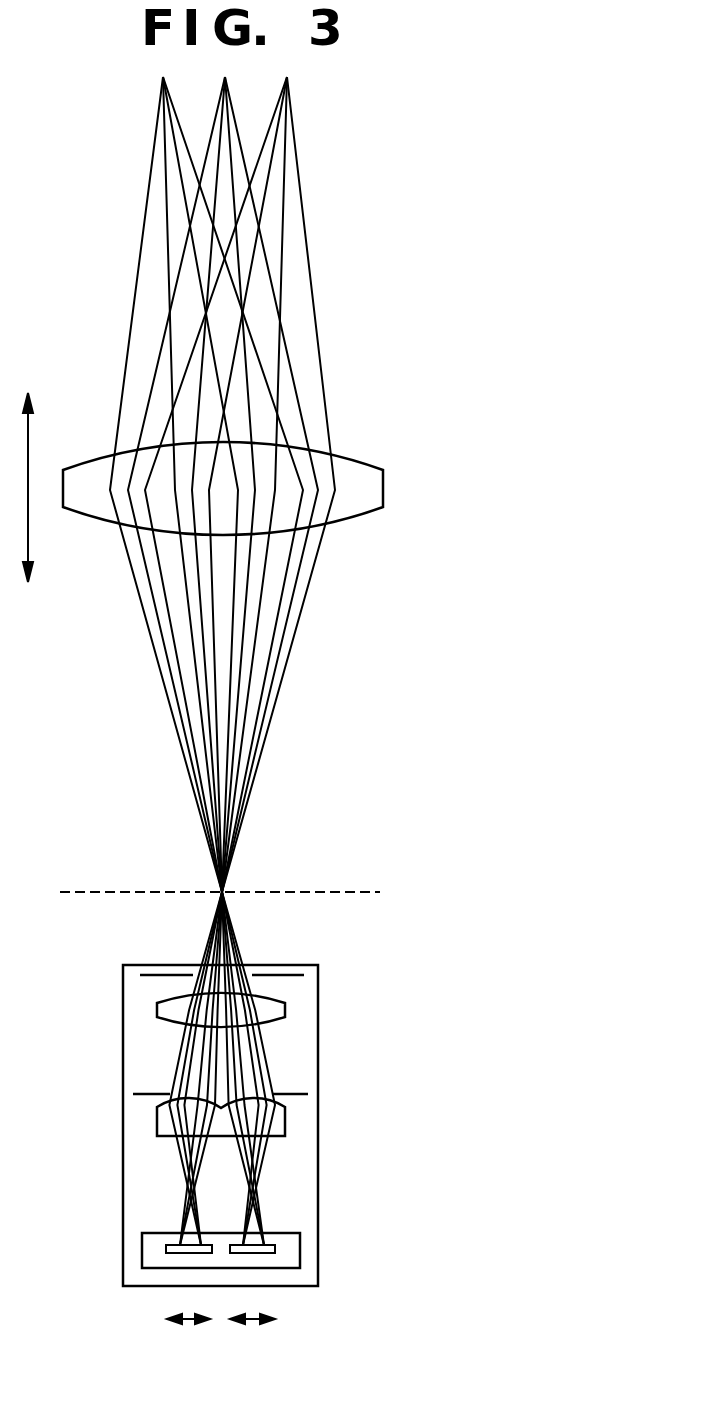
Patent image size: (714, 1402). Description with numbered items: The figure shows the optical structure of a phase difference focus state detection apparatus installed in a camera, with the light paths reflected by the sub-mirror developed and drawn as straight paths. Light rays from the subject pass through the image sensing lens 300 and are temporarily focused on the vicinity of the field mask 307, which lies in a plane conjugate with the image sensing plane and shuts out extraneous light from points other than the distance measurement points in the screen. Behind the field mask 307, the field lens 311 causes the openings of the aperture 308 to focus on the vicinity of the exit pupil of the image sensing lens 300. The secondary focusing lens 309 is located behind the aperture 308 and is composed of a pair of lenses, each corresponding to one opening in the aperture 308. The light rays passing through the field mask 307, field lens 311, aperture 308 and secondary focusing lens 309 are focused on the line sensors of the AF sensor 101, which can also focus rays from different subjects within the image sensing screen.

The image sensing lens 300 is at (384, 489).
The field mask 307 is at (285, 976).
The field lens 311 is at (283, 1022).
The aperture 308 is at (285, 1092).
The secondary focusing lens 309 is at (285, 1123).
The AF sensor 101 is at (300, 1252).